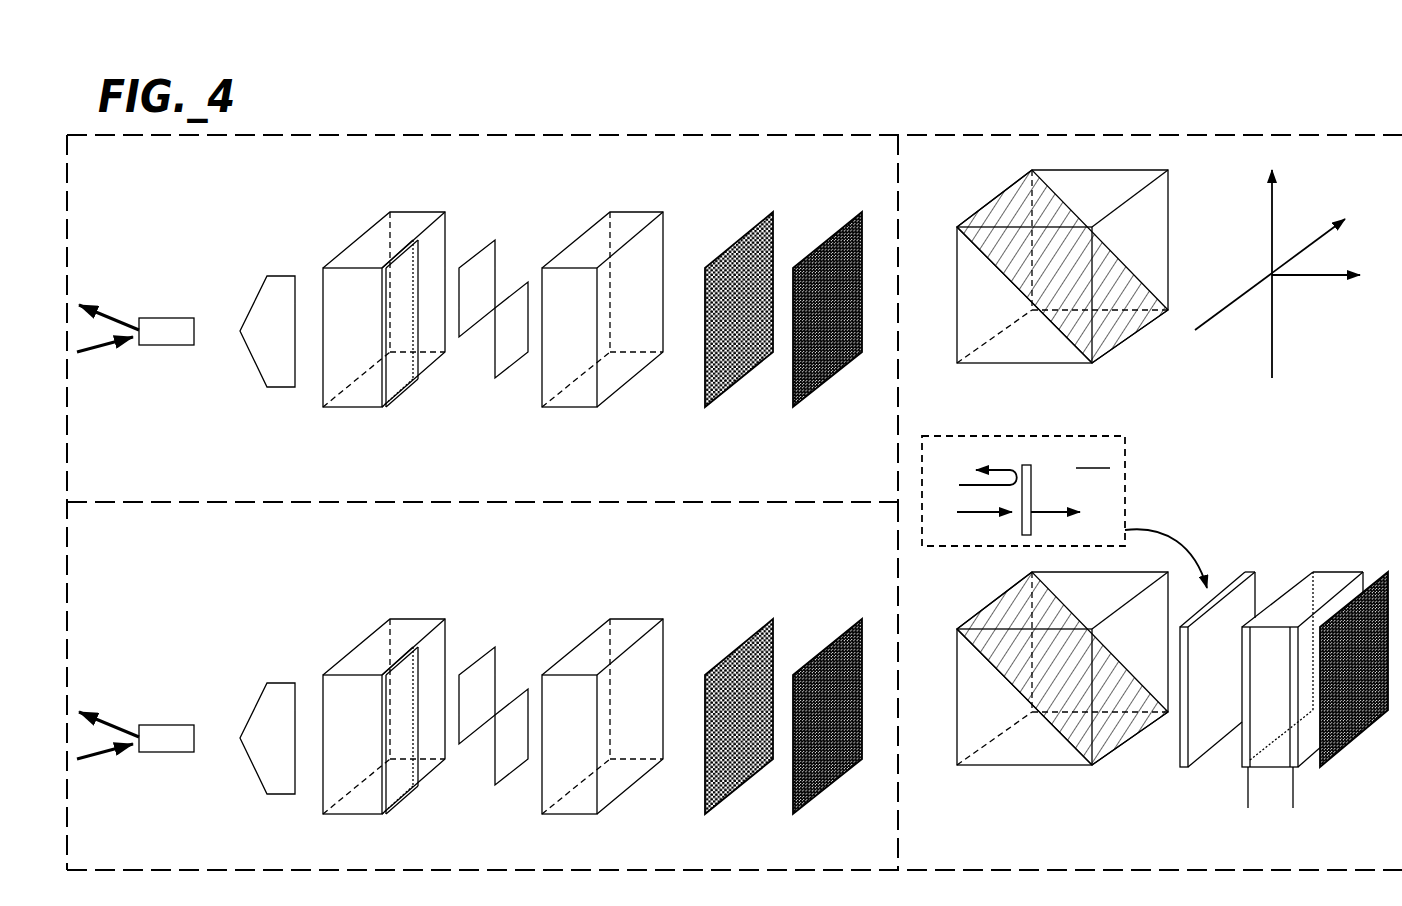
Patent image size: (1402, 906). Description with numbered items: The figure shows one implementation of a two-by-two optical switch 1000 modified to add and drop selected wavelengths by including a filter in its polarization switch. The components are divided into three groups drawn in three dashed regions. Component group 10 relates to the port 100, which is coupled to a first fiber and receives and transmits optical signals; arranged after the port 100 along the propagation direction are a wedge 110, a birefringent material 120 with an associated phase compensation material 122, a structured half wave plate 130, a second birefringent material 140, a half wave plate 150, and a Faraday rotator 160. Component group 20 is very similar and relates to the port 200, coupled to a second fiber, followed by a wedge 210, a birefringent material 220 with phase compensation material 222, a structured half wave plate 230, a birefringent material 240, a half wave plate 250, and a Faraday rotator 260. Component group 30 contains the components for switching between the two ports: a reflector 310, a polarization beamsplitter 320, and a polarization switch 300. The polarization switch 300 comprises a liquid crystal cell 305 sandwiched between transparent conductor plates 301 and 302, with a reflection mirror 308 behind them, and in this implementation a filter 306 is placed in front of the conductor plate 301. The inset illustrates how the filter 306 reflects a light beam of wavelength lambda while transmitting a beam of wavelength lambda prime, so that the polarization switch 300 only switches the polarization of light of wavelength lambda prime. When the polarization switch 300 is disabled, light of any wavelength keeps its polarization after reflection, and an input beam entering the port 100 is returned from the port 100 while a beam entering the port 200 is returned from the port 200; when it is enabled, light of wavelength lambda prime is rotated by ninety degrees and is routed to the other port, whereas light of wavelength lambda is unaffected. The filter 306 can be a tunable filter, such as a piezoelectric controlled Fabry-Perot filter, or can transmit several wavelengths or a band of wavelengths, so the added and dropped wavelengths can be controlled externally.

The 2×2 optical switch 1000 is at (1157, 90).
The component group 10 is at (197, 201).
The port 100 is at (172, 318).
The wedge 110 is at (283, 275).
The birefringent material 120 is at (407, 211).
The phase compensation material 122 is at (396, 257).
The structured Half Wave Plate 130 is at (486, 238).
The birefringent material 140 is at (632, 222).
The HWP 150 is at (758, 222).
The Faraday rotator 160 is at (857, 217).
The component group 20 is at (197, 607).
The port 200 is at (148, 753).
The wedge 210 is at (281, 797).
The birefringent material 220 is at (360, 818).
The phase compensation material 222 is at (393, 816).
The structured HWP 230 is at (520, 772).
The birefringent material 240 is at (575, 818).
The HWP 250 is at (725, 808).
The Faraday rotator 260 is at (822, 800).
The component group 30 is at (1196, 412).
The reflector 310 is at (1053, 366).
The Polarization BeamSplitter 320 is at (1056, 771).
The filter 306 is at (1256, 575).
The polarization switch 300 is at (1339, 528).
The liquid crystal cell 305 is at (1335, 569).
The transparent conductor plate 301 is at (1240, 757).
The transparent conductor plate 302 is at (1303, 768).
The reflection mirror 308 is at (1326, 763).